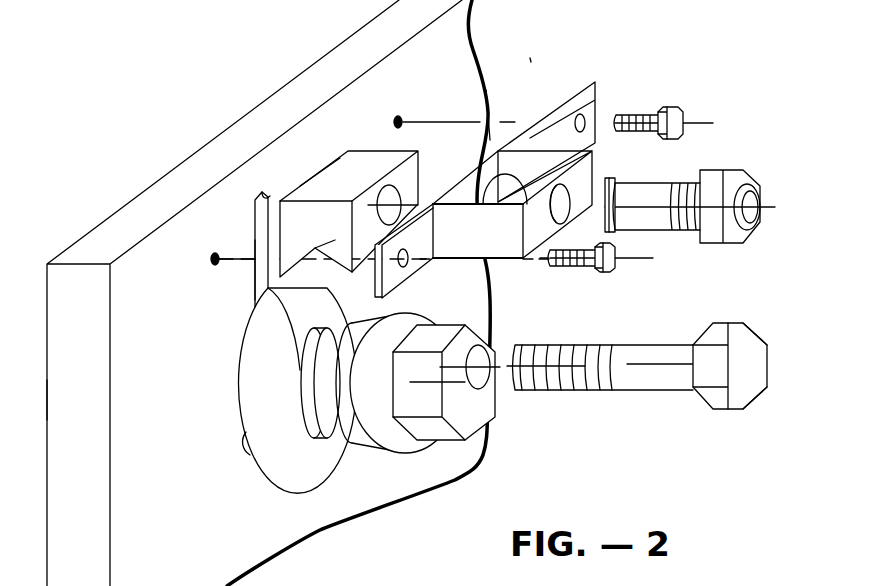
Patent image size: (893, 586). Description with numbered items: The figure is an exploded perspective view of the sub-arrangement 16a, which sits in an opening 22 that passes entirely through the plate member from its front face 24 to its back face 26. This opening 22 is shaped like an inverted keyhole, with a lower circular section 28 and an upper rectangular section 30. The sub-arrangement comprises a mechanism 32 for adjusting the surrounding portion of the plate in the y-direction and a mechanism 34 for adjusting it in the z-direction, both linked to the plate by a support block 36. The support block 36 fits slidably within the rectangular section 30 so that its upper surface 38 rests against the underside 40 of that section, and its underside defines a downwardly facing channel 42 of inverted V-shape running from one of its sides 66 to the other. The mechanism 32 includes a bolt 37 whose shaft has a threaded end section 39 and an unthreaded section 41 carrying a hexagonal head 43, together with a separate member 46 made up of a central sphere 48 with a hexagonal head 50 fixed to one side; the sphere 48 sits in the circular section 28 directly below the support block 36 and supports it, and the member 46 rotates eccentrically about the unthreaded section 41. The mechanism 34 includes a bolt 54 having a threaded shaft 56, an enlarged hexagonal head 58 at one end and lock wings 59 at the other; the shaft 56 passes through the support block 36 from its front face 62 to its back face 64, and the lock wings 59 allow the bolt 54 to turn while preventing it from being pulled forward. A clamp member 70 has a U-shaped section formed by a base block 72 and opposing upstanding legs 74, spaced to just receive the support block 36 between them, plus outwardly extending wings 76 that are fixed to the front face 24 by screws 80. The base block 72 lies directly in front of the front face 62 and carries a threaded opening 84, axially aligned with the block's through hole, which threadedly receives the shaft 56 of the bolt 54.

The sub-arrangement 16a is at (230, 300).
The opening 22 is at (228, 383).
The front face 24 is at (125, 462).
The back face 26 is at (47, 395).
The lower circular section 28 is at (248, 452).
The upper rectangular section 30 is at (316, 172).
The mechanism 32 is at (455, 460).
The mechanism 34 is at (530, 58).
The support block 36 is at (336, 163).
The bolt 37 is at (637, 371).
The upper surface 38 is at (398, 118).
The threaded end section 39 is at (575, 352).
The underside 40 is at (262, 190).
The unthreaded section 41 is at (660, 345).
The downwardly facing channel 42 is at (323, 288).
The hexagonal head 43 is at (713, 395).
The member 46 is at (366, 470).
The sphere 48 is at (385, 330).
The hexagonal head 50 is at (475, 340).
The bolt 54 is at (669, 205).
The threaded shaft 56 is at (640, 192).
The hexagonal head 58 is at (725, 178).
The lock wings 59 is at (605, 218).
The front face 62 is at (418, 162).
The back face 64 is at (277, 227).
The sides 66 is at (285, 243).
The clamp member 70 is at (541, 263).
The base block 72 is at (483, 196).
The upstanding legs 74 is at (498, 130).
The wings 76 is at (600, 85).
The screws 80 is at (668, 108).
The threaded opening 84 is at (496, 174).